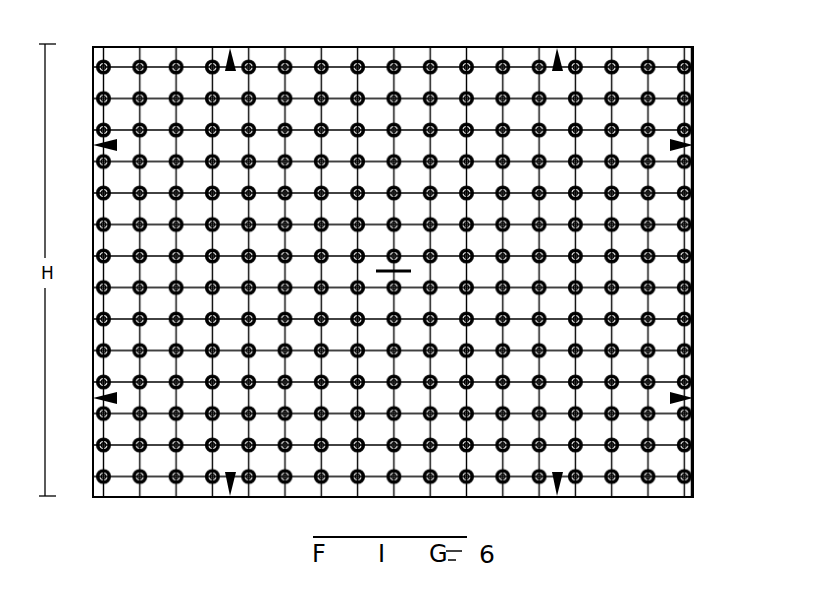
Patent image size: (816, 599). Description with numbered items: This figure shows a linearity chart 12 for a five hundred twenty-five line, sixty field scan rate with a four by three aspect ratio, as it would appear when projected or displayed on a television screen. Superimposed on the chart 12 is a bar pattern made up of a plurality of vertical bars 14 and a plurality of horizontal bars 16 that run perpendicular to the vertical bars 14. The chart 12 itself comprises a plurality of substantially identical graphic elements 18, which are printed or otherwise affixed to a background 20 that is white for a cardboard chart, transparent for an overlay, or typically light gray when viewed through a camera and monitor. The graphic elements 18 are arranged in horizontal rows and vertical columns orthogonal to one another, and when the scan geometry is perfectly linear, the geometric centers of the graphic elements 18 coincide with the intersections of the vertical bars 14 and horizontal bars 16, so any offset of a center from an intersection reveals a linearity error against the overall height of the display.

The linearity chart 12 is at (703, 63).
The vertical bars 14 is at (288, 53).
The horizontal bars 16 is at (668, 254).
The graphic elements 18 is at (108, 58).
The background 20 is at (668, 85).